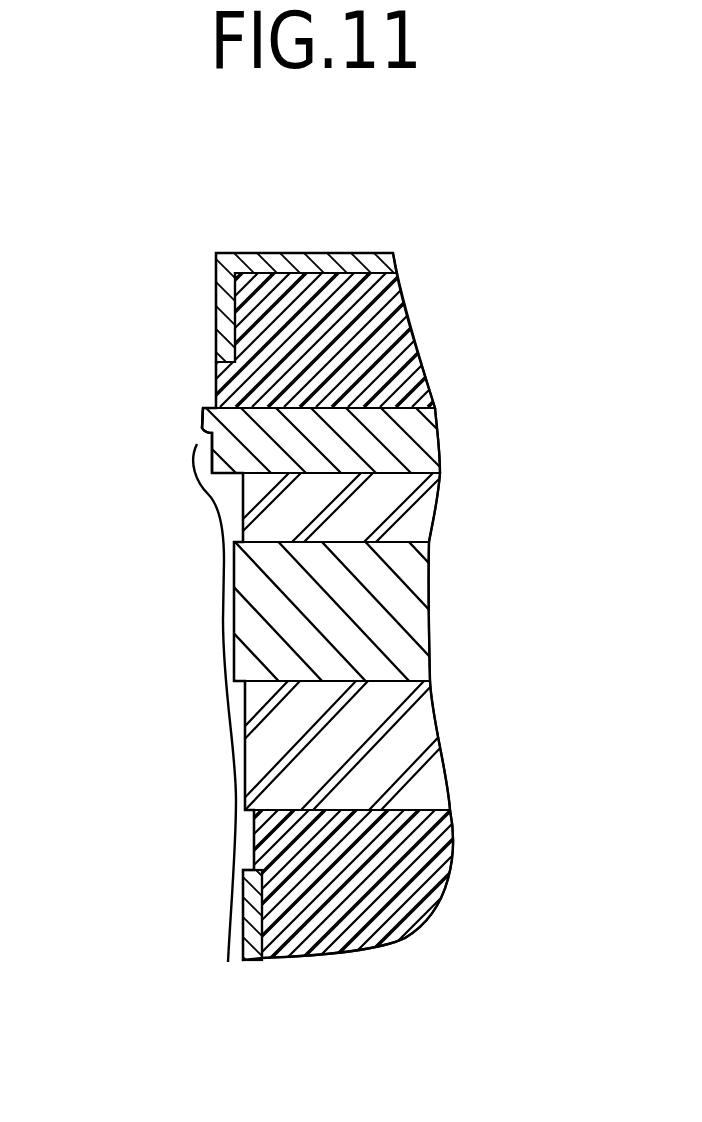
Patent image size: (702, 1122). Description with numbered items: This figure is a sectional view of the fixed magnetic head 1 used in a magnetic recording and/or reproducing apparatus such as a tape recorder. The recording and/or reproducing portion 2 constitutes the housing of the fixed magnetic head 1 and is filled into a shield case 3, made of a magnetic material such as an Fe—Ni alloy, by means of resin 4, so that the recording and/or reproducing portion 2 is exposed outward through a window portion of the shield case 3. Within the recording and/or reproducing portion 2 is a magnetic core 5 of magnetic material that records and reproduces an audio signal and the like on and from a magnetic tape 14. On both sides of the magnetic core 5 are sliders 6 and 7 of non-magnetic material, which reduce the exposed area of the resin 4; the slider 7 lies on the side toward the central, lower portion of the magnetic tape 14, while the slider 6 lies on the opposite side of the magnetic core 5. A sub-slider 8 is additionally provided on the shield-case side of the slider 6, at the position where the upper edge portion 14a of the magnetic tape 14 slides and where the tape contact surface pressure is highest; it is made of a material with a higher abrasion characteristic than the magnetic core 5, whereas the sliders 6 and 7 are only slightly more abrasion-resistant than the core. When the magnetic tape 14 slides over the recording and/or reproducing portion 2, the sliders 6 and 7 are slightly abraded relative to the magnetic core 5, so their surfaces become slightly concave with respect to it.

The fixed magnetic head 1 is at (452, 266).
The recording and/or reproducing portion 2 is at (353, 608).
The shield case 3 is at (213, 307).
The resin 4 is at (398, 343).
The magnetic core 5 is at (415, 612).
The slider 6 is at (425, 502).
The slider 7 is at (306, 745).
The sub-slider 8 is at (425, 440).
The magnetic tape 14 is at (228, 836).
The edge portion 14a is at (200, 450).